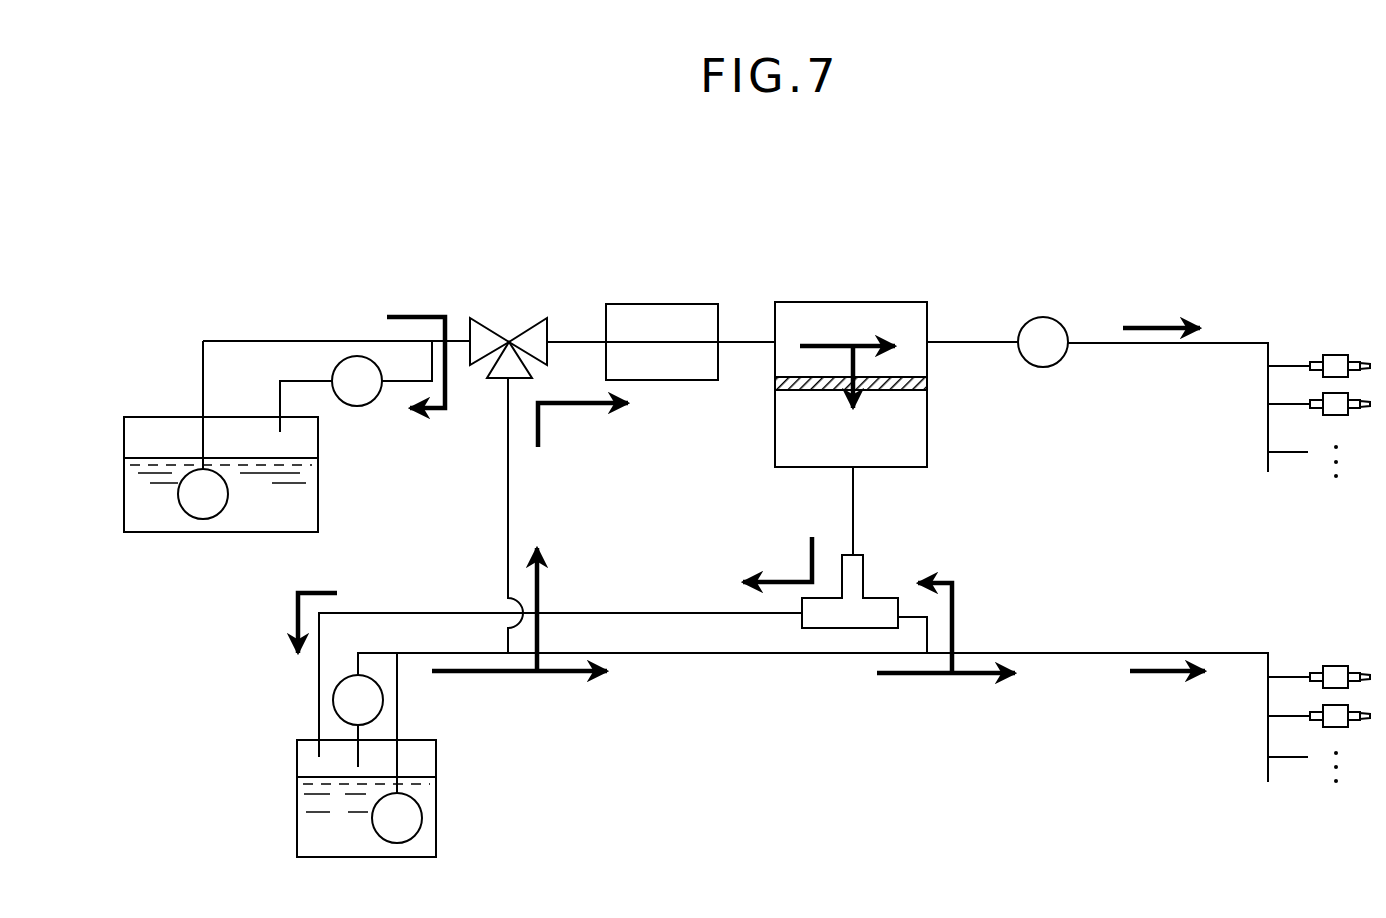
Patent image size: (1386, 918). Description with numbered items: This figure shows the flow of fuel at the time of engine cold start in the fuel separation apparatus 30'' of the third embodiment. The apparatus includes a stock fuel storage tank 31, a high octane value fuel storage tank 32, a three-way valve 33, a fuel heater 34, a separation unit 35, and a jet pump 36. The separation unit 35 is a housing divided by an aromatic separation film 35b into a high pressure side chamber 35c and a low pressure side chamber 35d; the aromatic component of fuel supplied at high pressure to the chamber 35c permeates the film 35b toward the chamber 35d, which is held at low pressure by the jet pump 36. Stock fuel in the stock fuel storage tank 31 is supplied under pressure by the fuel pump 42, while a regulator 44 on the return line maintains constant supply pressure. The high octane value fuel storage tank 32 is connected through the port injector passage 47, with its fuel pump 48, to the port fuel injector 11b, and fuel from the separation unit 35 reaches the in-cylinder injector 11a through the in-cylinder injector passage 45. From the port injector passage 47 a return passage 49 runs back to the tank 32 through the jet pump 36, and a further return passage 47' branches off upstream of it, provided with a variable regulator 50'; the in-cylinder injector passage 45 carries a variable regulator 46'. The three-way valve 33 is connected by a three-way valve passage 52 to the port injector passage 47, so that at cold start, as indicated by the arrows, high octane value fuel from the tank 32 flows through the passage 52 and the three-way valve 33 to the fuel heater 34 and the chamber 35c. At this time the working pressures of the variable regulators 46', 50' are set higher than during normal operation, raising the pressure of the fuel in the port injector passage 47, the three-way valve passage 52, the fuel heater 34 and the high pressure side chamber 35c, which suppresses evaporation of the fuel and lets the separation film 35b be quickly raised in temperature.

The fuel separation apparatus 30'' is at (768, 191).
The stock fuel storage tank 31 is at (160, 417).
The high octane value fuel storage tank 32 is at (437, 808).
The three-way valve 33 is at (527, 326).
The fuel heater 34 is at (679, 304).
The separation unit 35 is at (896, 402).
The aromatic separation film 35b is at (915, 388).
The chamber 35c is at (917, 322).
The chamber 35d is at (910, 460).
The jet pump 36 is at (865, 575).
The fuel pump 42 is at (224, 513).
The regulator 44 is at (352, 406).
The in-cylinder injector passage 45 is at (1137, 343).
The variable regulator 46' is at (1067, 311).
The port injector passage 47 is at (813, 683).
The return passage 47' is at (382, 610).
The fuel pump 48 is at (381, 838).
The return passage 49 is at (663, 613).
The variable regulator 50' is at (305, 709).
The three-way valve passage 52 is at (508, 522).
The in-cylinder injector 11a is at (1331, 354).
The port fuel injector 11b is at (1333, 666).